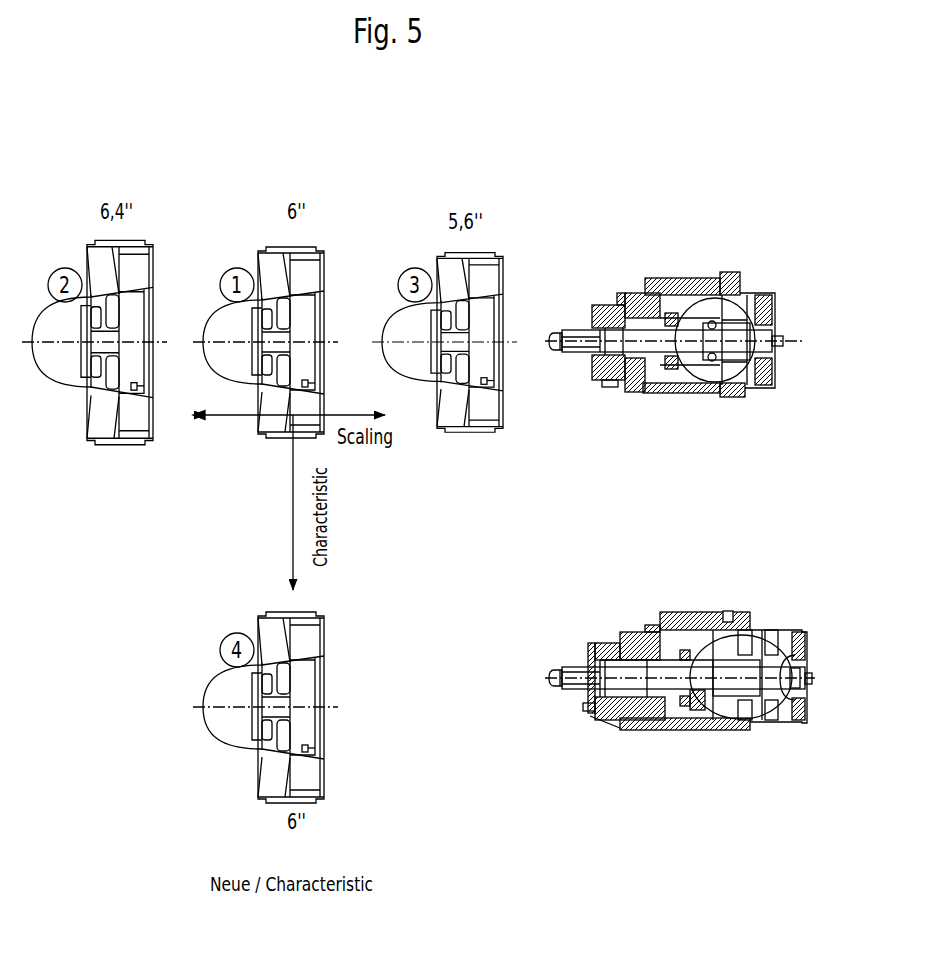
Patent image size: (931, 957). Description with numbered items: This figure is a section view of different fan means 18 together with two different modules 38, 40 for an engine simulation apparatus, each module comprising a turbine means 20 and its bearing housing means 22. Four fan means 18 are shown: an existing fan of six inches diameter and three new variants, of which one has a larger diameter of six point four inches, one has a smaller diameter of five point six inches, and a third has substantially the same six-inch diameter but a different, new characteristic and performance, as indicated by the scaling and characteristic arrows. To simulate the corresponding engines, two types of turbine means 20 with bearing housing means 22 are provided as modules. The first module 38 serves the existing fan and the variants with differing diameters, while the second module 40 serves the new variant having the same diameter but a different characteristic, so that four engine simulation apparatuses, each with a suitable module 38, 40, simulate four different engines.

The fan means 18 is at (105, 428).
The turbine means 20 is at (623, 358).
The bearing housing means 22 is at (748, 313).
The first module 38 is at (782, 283).
The second module 40 is at (806, 617).